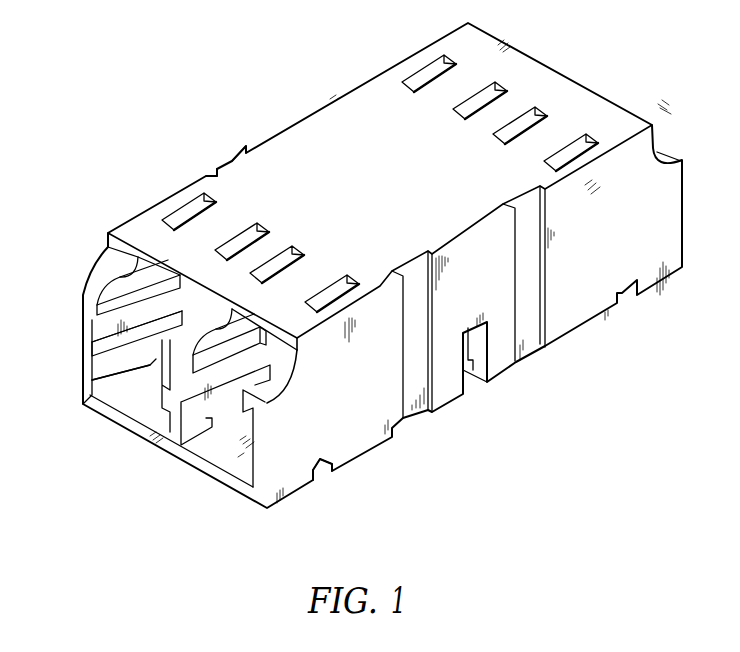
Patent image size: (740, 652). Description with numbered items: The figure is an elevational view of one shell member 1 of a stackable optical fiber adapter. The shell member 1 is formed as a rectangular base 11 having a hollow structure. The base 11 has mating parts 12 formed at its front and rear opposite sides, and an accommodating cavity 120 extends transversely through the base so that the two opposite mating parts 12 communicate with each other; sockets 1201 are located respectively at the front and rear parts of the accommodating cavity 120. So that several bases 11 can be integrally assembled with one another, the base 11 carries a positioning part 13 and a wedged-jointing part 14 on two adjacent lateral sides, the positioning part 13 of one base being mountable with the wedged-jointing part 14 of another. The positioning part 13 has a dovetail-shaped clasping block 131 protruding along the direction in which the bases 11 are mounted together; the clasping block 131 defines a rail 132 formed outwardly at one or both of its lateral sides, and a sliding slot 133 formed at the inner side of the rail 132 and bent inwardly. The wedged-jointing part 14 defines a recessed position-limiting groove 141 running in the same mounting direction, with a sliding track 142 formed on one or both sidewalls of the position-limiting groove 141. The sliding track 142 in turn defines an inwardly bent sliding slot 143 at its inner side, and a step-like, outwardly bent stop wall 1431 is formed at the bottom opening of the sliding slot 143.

The shell member 1 is at (290, 77).
The base 11 is at (295, 134).
The mating part 12 is at (83, 326).
The accommodating cavity 120 is at (140, 358).
The socket 1201 is at (100, 378).
The positioning part 13 is at (172, 134).
The clasping block 131 is at (232, 156).
The rail 132 is at (213, 168).
The sliding slot 133 is at (206, 174).
The wedged-jointing part 14 is at (376, 508).
The position-limiting groove 141 is at (333, 466).
The sliding track 142 is at (311, 483).
The sliding slot 143 is at (328, 477).
The stop wall 1431 is at (158, 380).